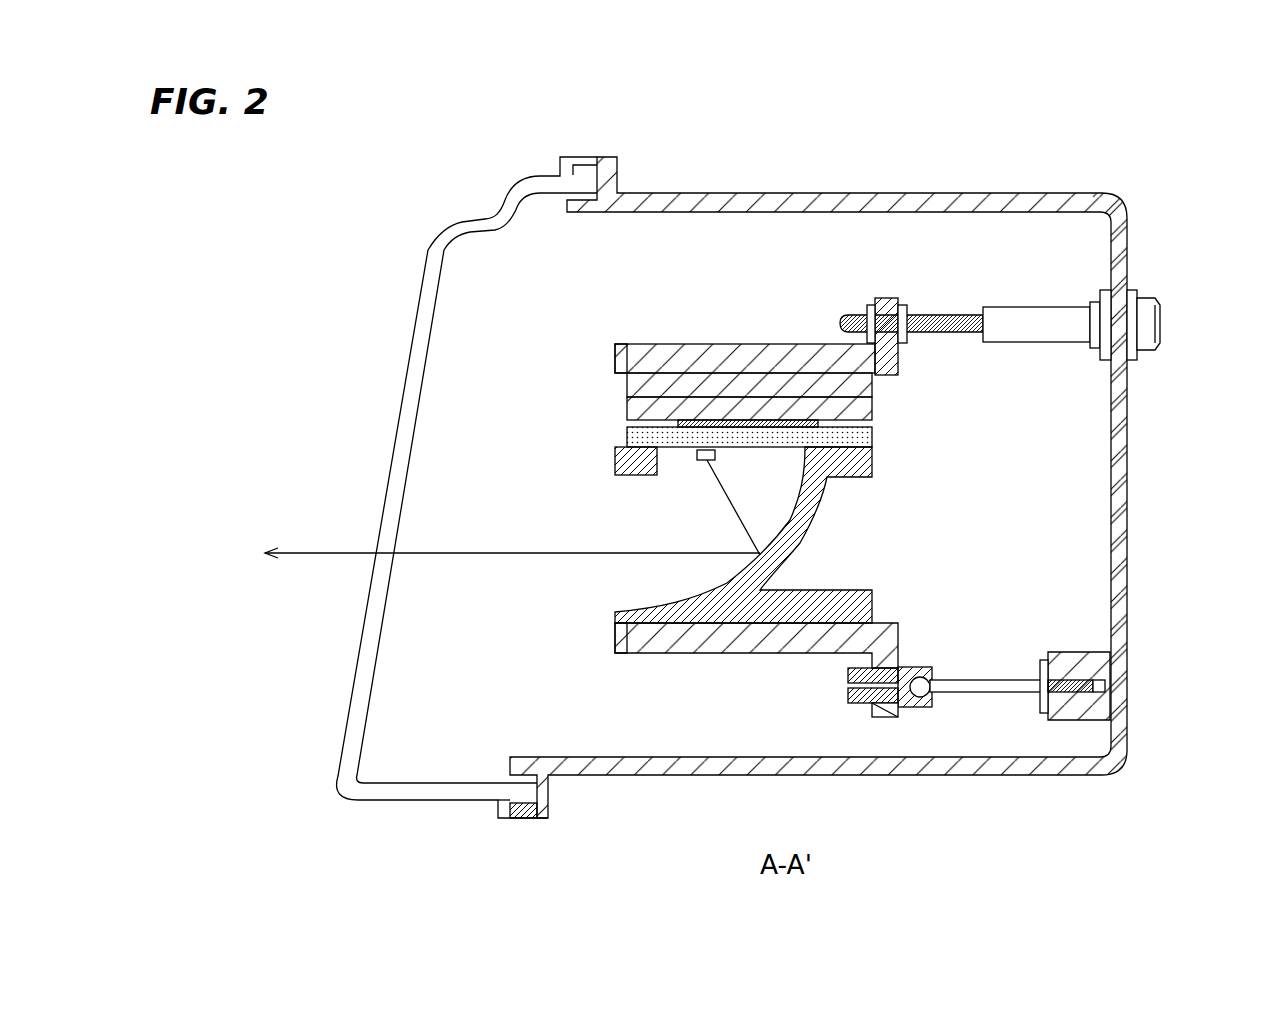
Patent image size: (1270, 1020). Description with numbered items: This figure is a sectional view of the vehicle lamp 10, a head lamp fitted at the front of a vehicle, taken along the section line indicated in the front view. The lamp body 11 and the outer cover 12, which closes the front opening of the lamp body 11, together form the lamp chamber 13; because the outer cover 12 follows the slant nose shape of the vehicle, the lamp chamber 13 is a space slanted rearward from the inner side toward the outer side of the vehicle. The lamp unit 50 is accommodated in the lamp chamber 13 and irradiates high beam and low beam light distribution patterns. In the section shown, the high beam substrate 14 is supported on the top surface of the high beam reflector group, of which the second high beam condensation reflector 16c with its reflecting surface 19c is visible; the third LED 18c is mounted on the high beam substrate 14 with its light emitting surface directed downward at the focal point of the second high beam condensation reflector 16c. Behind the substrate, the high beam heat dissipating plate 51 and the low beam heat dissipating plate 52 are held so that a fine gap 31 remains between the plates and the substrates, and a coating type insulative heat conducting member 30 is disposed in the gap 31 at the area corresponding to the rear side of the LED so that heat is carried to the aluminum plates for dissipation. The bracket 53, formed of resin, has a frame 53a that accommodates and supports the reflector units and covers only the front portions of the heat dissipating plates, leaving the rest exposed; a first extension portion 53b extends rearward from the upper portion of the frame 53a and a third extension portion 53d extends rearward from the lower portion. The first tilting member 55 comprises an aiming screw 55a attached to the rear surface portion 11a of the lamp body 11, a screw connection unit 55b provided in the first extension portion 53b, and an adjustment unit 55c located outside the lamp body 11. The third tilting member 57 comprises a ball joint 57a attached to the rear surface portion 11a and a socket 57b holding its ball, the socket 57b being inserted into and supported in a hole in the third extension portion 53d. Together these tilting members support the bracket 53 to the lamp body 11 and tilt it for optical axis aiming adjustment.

The vehicle lamp 10 is at (462, 178).
The lamp body 11 is at (693, 775).
The rear surface portion 11a is at (1127, 258).
The outer cover 12 is at (425, 275).
The lamp chamber 13 is at (543, 272).
The high beam substrate 14 is at (627, 438).
The second high beam condensation reflector 16c is at (615, 462).
The third LED 18c is at (700, 462).
The reflecting surface 19c is at (695, 592).
The heat conducting member 30 is at (763, 442).
The gap 31 is at (875, 423).
The lamp unit 50 is at (752, 330).
The high beam heat dissipating plate 51 is at (627, 408).
The low beam heat dissipating plate 52 is at (627, 385).
The bracket 53 is at (752, 485).
The frame 53a is at (627, 352).
The first extension portion 53b is at (795, 352).
The third extension portion 53d is at (766, 645).
The first tilting member 55 is at (1041, 271).
The aiming screw 55a is at (938, 335).
The screw connection unit 55b is at (871, 301).
The adjustment unit 55c is at (1162, 325).
The third tilting member 57 is at (976, 711).
The ball joint 57a is at (938, 654).
The socket 57b is at (910, 665).